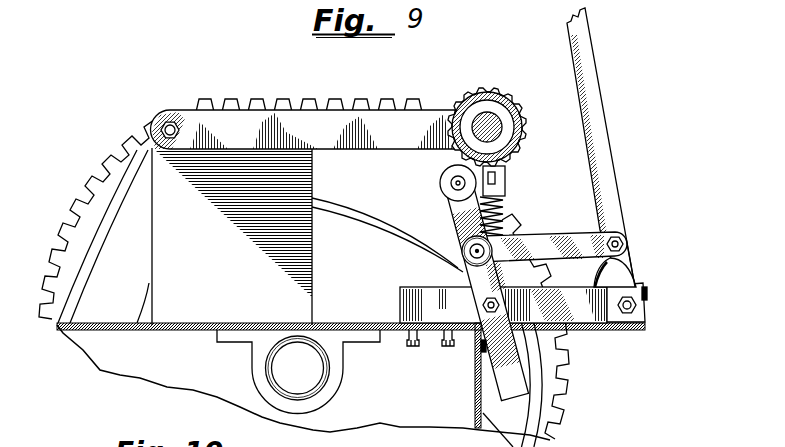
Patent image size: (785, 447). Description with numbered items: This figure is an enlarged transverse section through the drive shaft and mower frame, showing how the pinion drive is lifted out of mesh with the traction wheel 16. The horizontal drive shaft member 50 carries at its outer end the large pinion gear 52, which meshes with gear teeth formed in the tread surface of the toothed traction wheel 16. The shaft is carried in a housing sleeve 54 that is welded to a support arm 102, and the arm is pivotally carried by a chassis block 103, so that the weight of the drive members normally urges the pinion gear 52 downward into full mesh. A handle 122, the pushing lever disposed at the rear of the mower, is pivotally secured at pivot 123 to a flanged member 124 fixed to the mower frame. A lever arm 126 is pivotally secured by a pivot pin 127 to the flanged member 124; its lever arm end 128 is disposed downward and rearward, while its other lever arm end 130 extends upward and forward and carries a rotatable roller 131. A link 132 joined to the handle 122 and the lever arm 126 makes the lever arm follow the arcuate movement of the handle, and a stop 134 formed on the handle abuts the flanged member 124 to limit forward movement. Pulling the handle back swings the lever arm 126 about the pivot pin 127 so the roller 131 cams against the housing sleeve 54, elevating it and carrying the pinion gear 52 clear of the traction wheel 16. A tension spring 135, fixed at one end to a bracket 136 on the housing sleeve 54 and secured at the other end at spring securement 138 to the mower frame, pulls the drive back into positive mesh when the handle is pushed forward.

The traction wheel 16 is at (115, 148).
The horizontal drive shaft member 50 is at (487, 127).
The pinion gear 52 is at (480, 82).
The housing sleeve 54 is at (452, 108).
The support arm 102 is at (383, 120).
The chassis block 103 is at (180, 225).
The handle 122 is at (597, 98).
The pivot 123 is at (636, 305).
The flanged member 124 is at (600, 323).
The lever arm 126 is at (468, 283).
The pivot pin 127 is at (482, 305).
The lever arm end 128 is at (480, 387).
The lever arm end 130 is at (465, 215).
The roller 131 is at (440, 185).
The link 132 is at (550, 238).
The stop 134 is at (600, 279).
The tension spring 135 is at (500, 203).
The bracket 136 is at (523, 107).
The spring securement 138 is at (480, 343).